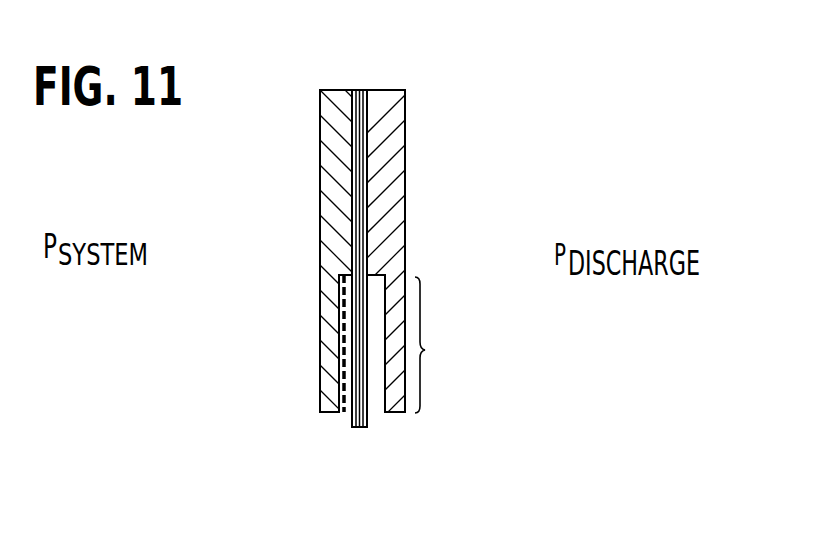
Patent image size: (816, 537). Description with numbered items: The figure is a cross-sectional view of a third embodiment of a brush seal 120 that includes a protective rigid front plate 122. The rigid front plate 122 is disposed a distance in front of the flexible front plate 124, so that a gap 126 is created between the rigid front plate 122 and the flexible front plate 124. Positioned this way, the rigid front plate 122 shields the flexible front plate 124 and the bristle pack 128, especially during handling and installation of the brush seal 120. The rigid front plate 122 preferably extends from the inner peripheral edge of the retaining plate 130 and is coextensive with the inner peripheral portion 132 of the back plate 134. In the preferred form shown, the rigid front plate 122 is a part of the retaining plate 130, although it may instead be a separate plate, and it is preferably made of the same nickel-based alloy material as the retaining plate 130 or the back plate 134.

The brush seal 120 is at (445, 118).
The rigid front plate 122 is at (320, 376).
The flexible front plate 124 is at (349, 422).
The gap 126 is at (342, 400).
The bristle pack 128 is at (370, 428).
The retaining plate 130 is at (341, 89).
The inner peripheral portion 132 is at (441, 345).
The back plate 134 is at (405, 192).